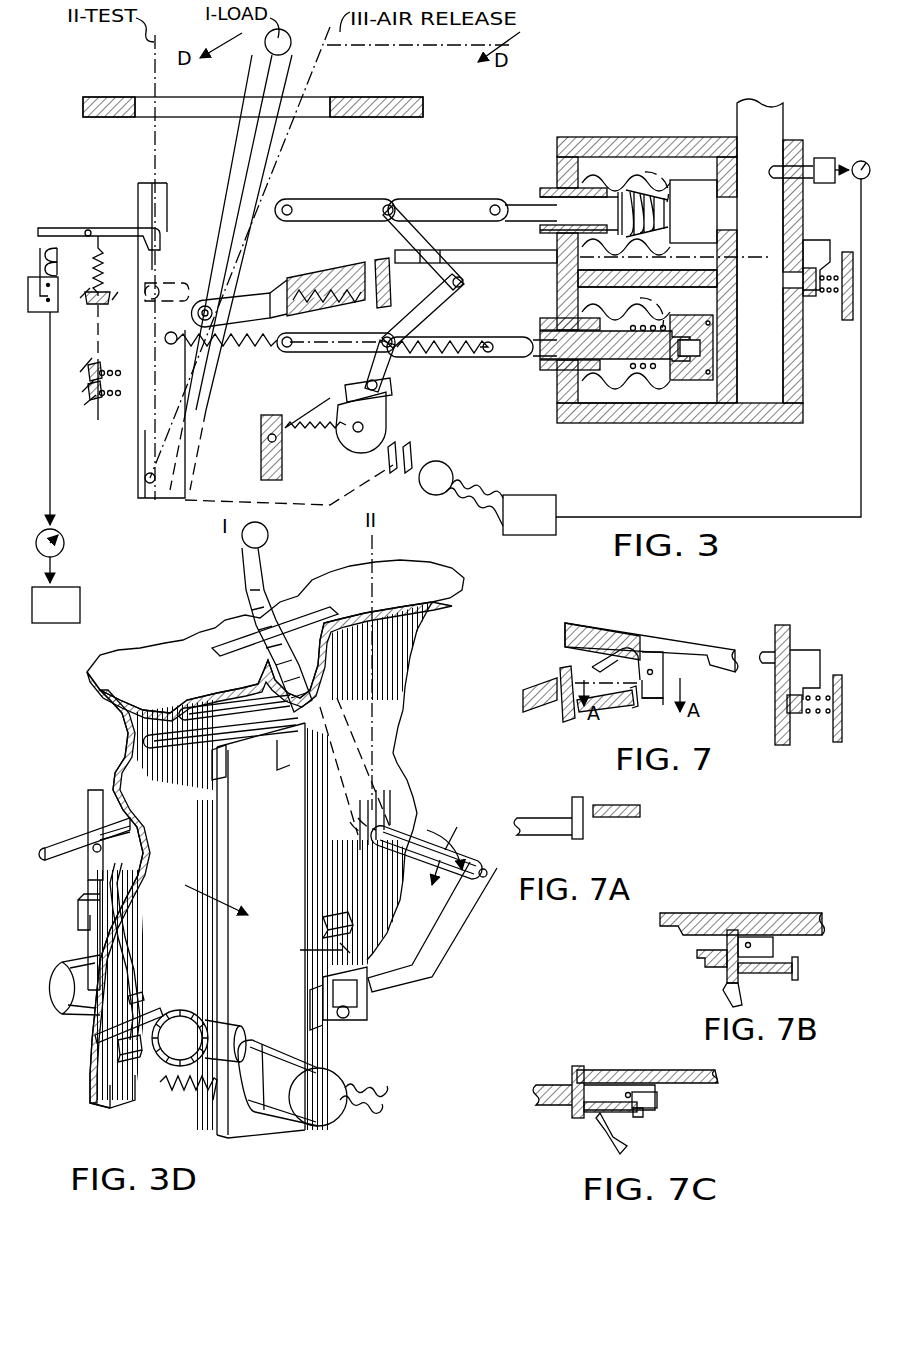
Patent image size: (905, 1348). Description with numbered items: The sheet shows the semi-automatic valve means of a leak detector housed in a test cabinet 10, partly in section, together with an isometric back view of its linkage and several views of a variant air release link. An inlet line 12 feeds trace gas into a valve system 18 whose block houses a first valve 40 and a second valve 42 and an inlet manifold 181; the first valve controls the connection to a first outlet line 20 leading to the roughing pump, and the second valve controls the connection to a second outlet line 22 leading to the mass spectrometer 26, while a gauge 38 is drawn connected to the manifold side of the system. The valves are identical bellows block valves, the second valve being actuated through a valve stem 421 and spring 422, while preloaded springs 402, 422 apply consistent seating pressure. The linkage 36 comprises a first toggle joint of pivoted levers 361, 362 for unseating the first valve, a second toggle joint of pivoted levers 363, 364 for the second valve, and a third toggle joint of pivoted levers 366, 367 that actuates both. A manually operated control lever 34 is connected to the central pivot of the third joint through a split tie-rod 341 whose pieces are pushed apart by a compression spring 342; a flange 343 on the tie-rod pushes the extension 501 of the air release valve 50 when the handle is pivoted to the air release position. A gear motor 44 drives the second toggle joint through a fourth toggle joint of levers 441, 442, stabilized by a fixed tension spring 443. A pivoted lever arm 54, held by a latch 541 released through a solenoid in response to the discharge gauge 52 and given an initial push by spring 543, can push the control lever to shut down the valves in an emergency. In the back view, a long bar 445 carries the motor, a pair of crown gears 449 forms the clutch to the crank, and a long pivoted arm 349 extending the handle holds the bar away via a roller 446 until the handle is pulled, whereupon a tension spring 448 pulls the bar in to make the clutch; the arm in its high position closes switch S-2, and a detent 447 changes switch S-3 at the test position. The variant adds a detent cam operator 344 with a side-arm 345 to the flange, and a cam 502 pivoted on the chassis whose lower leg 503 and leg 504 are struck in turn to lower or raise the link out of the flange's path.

In FIG. 3, the test cabinet 10 is at (843, 255).
In FIG. 3D, the test cabinet 10 is at (150, 659).
In FIG. 3, the inlet line 12 is at (776, 125).
In FIG. 3, the valve system 18 is at (582, 138).
In FIG. 3, the inlet manifold 181 is at (758, 348).
In FIG. 3, the first outlet line 20 is at (675, 176).
In FIG. 3, the second outlet line 22 is at (663, 320).
In FIG. 3, the mass spectrometer 26 is at (68, 614).
In FIG. 3, the control lever 34 is at (240, 172).
In FIG. 3D, the control lever 34 is at (245, 608).
In FIG. 3, the linkage 36 is at (400, 190).
In FIG. 3, the pivoted lever 361 is at (351, 200).
In FIG. 3, the pivoted lever 362 is at (445, 201).
In FIG. 3, the pivoted lever 363 is at (292, 354).
In FIG. 3D, the pivoted lever 363 is at (120, 825).
In FIG. 3, the pivoted lever 364 is at (490, 328).
In FIG. 3D, the pivoted lever 364 is at (68, 852).
In FIG. 3, the pivoted lever 366 is at (438, 234).
In FIG. 3, the pivoted lever 367 is at (466, 298).
In FIG. 3D, the pivoted lever 367 is at (95, 790).
In FIG. 3, the split tie-rod 341 is at (290, 292).
In FIG. 7, the split tie-rod 341 is at (540, 694).
In FIG. 7B, the split tie-rod 341 is at (700, 955).
In FIG. 7C, the split tie-rod 341 is at (532, 1098).
In FIG. 3, the compression spring 342 is at (332, 280).
In FIG. 3, the flange 343 is at (381, 262).
In FIG. 7, the flange 343 is at (560, 672).
In FIG. 7B, the flange 343 is at (736, 932).
In FIG. 7C, the flange 343 is at (578, 1066).
In FIG. 7, the detent cam operator 344 is at (620, 710).
In FIG. 7A, the detent cam operator 344 is at (540, 830).
In FIG. 7B, the detent cam operator 344 is at (768, 978).
In FIG. 7C, the detent cam operator 344 is at (593, 1115).
In FIG. 7A, the side-arm 345 is at (572, 810).
In FIG. 3D, the pivoted arm 349 is at (432, 962).
In FIG. 3, the gauge 38 is at (861, 162).
In FIG. 3, the first valve 40 is at (690, 178).
In FIG. 3, the spring 402 is at (668, 213).
In FIG. 3, the second valve 42 is at (695, 380).
In FIG. 3, the valve stem 421 is at (530, 360).
In FIG. 3, the spring 422 is at (620, 392).
In FIG. 3, the gear motor 44 is at (455, 468).
In FIG. 3D, the gear motor 44 is at (300, 1120).
In FIG. 3, the lever 441 is at (380, 428).
In FIG. 3D, the lever 441 is at (98, 942).
In FIG. 3, the lever 442 is at (395, 380).
In FIG. 3D, the lever 442 is at (88, 872).
In FIG. 3, the tension spring 443 is at (295, 420).
In FIG. 3D, the bar 445 is at (287, 857).
In FIG. 3D, the roller 446 is at (360, 1012).
In FIG. 3D, the detent 447 is at (150, 976).
In FIG. 3D, the tension spring 448 is at (175, 1100).
In FIG. 3D, the crown gears 449 is at (183, 1003).
In FIG. 7, the air release valve 50 is at (795, 714).
In FIG. 3, the extension 501 is at (532, 255).
In FIG. 7, the extension 501 is at (810, 659).
In FIG. 7B, the extension 501 is at (775, 914).
In FIG. 7C, the extension 501 is at (669, 1071).
In FIG. 7, the cam 502 is at (666, 673).
In FIG. 7B, the cam 502 is at (775, 947).
In FIG. 7C, the cam 502 is at (663, 1098).
In FIG. 7, the lower leg 503 is at (655, 702).
In FIG. 7A, the lower leg 503 is at (632, 806).
In FIG. 7C, the lower leg 503 is at (648, 1108).
In FIG. 7, the leg 504 is at (640, 650).
In FIG. 7C, the leg 504 is at (618, 1127).
In FIG. 3, the discharge gauge 52 is at (66, 545).
In FIG. 3, the pivoted lever arm 54 is at (130, 467).
In FIG. 3, the latch 541 is at (117, 230).
In FIG. 3, the spring 543 is at (108, 400).
In FIG. 3D, the switch S-2 is at (340, 914).
In FIG. 3D, the switch S-3 is at (118, 1046).